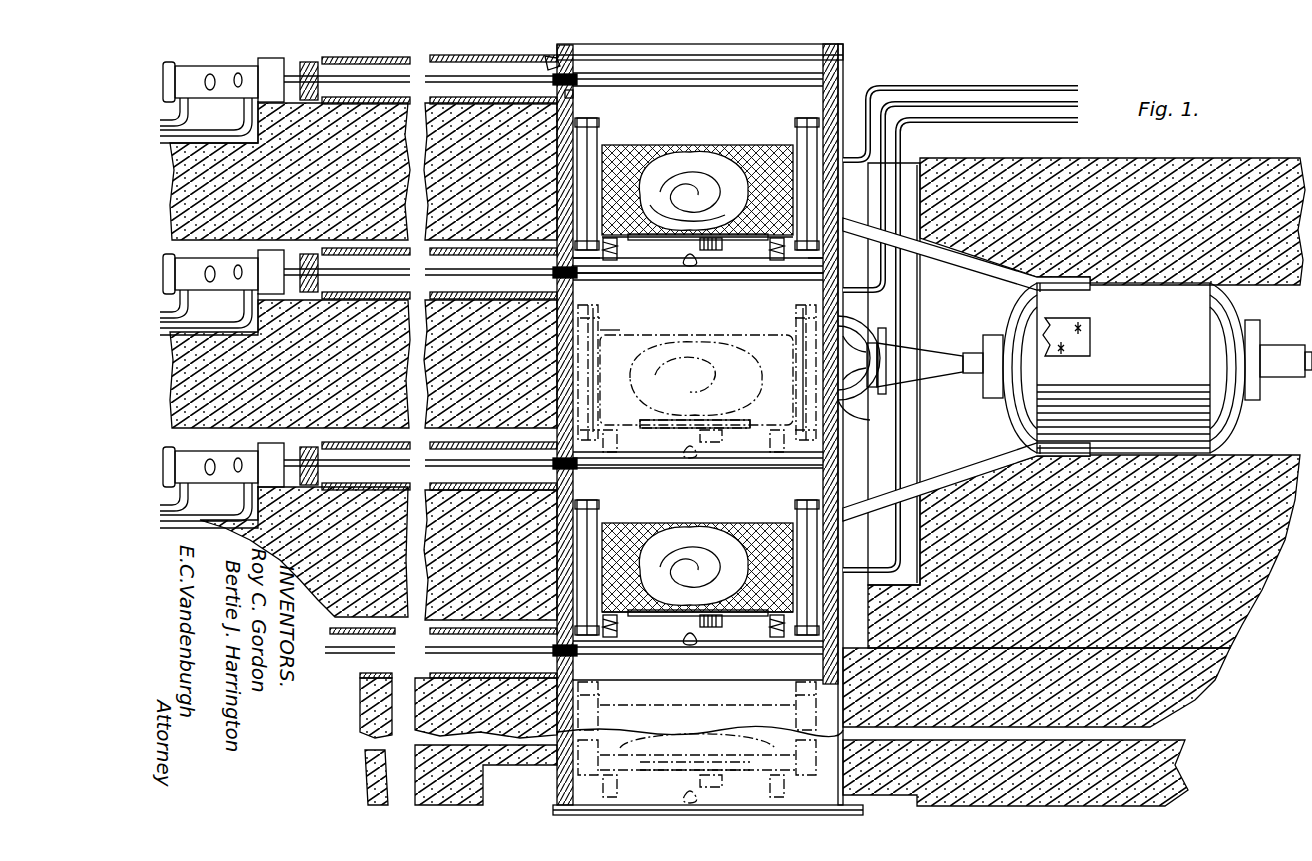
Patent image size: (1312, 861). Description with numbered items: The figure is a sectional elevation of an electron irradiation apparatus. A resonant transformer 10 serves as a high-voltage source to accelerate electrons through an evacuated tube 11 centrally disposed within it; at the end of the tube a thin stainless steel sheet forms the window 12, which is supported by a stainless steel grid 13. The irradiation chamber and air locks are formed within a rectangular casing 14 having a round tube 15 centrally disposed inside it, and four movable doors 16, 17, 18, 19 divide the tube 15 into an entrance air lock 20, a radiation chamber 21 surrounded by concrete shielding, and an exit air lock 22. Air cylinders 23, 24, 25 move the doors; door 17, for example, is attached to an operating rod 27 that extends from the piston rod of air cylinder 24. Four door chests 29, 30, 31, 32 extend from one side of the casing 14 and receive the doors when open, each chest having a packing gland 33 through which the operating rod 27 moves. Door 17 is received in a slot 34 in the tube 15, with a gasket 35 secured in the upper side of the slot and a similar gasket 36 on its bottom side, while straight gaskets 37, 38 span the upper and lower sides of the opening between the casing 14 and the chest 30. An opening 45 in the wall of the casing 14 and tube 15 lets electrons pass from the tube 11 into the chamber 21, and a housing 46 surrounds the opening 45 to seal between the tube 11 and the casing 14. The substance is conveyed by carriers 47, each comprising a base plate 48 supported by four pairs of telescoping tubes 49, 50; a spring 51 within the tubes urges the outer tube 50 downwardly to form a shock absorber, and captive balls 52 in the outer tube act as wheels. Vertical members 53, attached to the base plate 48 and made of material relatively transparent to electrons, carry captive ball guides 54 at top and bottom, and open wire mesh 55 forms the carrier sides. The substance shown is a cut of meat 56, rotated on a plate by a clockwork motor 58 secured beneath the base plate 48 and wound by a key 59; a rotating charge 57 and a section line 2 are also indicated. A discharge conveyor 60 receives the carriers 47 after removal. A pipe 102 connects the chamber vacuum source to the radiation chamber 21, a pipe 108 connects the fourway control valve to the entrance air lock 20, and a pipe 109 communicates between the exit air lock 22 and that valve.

The section line 2 is at (856, 276).
The resonant transformer 10 is at (1168, 352).
The evacuated tube 11 is at (940, 348).
The window 12 is at (885, 335).
The stainless steel grid 13 is at (880, 348).
The rectangular casing 14 is at (845, 65).
The round tube 15 is at (820, 100).
The movable door 16 is at (655, 70).
The movable door 17 is at (800, 302).
The movable door 18 is at (665, 470).
The movable door 19 is at (698, 663).
The entrance air lock 20 is at (697, 304).
The radiation chamber 21 is at (745, 315).
The exit air lock 22 is at (698, 554).
The air cylinder 23 is at (205, 82).
The air cylinder 24 is at (195, 254).
The air cylinder 25 is at (290, 364).
The operating rod 27 is at (375, 82).
The door chest 29 is at (450, 60).
The door chest 30 is at (478, 248).
The door chest 31 is at (470, 440).
The door chest 32 is at (500, 628).
The packing gland 33 is at (305, 75).
The slot 34 is at (625, 308).
The gasket 35 is at (580, 78).
The gasket 36 is at (578, 82).
The straight gasket 37 is at (572, 68).
The straight gasket 38 is at (573, 96).
The opening 45 is at (860, 322).
The housing 46 is at (870, 412).
The carrier 47 is at (700, 148).
The base plate 48 is at (664, 537).
The inner telescoping tube 49 is at (770, 625).
The outer telescoping tube 50 is at (600, 648).
The spring 51 is at (712, 640).
The captive ball 52 is at (790, 655).
The vertical member 53 is at (615, 318).
The captive ball guide 54 is at (765, 270).
The wire mesh 55 is at (778, 160).
The cut of meat 56 is at (645, 150).
The charge 57 is at (710, 389).
The clockwork motor 58 is at (690, 455).
The key 59 is at (715, 455).
The discharge conveyor 60 is at (845, 800).
The pipe 102 is at (1050, 104).
The pipe 108 is at (1012, 85).
The pipe 109 is at (1015, 125).